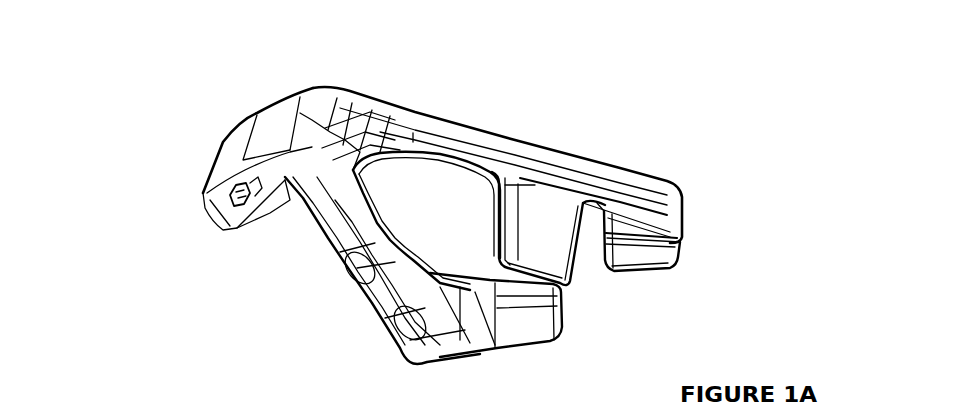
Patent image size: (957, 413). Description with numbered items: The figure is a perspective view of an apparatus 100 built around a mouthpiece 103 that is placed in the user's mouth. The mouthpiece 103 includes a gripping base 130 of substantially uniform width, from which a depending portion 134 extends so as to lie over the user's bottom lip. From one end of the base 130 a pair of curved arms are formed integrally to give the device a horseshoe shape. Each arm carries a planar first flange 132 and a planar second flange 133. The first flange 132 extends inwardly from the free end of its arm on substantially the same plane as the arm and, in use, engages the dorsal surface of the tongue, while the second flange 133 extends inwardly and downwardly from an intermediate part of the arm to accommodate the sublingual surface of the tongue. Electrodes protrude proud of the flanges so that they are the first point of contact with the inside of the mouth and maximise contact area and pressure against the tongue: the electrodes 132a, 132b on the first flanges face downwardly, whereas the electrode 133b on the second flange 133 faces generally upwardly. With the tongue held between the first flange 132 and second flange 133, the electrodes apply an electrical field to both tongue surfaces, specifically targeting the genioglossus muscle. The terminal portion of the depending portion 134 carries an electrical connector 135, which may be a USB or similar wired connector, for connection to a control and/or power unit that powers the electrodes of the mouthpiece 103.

The apparatus 100 is at (652, 78).
The mouthpiece 103 is at (337, 87).
The gripping base 130 is at (227, 137).
The first flange 132 is at (687, 238).
The electrode 132a is at (630, 267).
The electrode 132b is at (513, 330).
The second flange 133 is at (530, 240).
The electrode 133b is at (407, 360).
The depending portion 134 is at (213, 155).
The electrical connector 135 is at (203, 202).